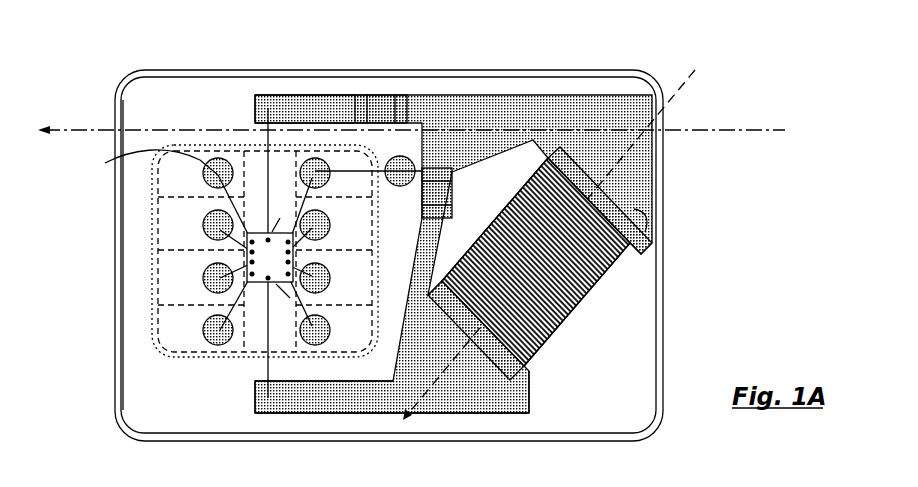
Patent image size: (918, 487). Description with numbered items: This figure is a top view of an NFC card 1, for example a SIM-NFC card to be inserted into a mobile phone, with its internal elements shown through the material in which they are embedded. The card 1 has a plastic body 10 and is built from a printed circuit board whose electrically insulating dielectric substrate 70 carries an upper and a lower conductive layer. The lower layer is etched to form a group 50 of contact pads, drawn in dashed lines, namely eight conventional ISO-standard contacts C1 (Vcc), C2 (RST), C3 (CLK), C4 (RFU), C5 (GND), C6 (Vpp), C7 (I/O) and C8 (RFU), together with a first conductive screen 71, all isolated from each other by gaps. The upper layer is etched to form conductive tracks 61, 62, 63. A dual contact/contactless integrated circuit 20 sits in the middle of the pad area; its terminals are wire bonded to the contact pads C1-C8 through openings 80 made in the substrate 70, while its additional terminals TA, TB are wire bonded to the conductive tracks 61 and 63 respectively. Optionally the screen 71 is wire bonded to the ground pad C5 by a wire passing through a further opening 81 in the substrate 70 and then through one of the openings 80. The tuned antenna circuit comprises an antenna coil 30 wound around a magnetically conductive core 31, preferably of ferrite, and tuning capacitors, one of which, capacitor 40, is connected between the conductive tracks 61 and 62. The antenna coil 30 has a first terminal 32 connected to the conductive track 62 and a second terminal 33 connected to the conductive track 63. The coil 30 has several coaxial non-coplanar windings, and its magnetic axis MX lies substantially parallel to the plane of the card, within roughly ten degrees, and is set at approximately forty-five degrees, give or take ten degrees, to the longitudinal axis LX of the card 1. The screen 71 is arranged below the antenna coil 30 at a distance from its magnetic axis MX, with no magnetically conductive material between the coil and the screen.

The NFC card 1 is at (97, 46).
The plastic body 10 is at (178, 70).
The integrated circuit 20 is at (270, 257).
The antenna coil 30 is at (592, 292).
The magnetically conductive core 31 is at (638, 238).
The first terminal of the antenna coil 32 is at (634, 211).
The second terminal of the antenna coil 33 is at (528, 416).
The tuning capacitor 40 is at (381, 109).
The group of contact pads 50 is at (143, 260).
The conductive track 61 is at (321, 110).
The conductive track 62 is at (453, 110).
The conductive track 63 is at (344, 396).
The dielectric substrate 70 is at (152, 107).
The first conductive screen 71 is at (298, 105).
The openings 80 is at (151, 162).
The further opening 81 is at (405, 158).
The contact pad C1 is at (214, 200).
The contact pad C2 is at (214, 231).
The contact pad C3 is at (213, 278).
The contact pad C4 is at (214, 309).
The contact pad C5 is at (303, 199).
The contact pad C6 is at (323, 230).
The contact pad C7 is at (323, 278).
The contact pad C8 is at (323, 312).
The terminal TA is at (281, 216).
The terminal TB is at (283, 298).
The longitudinal axis LX is at (746, 128).
The magnetic axis MX is at (684, 82).